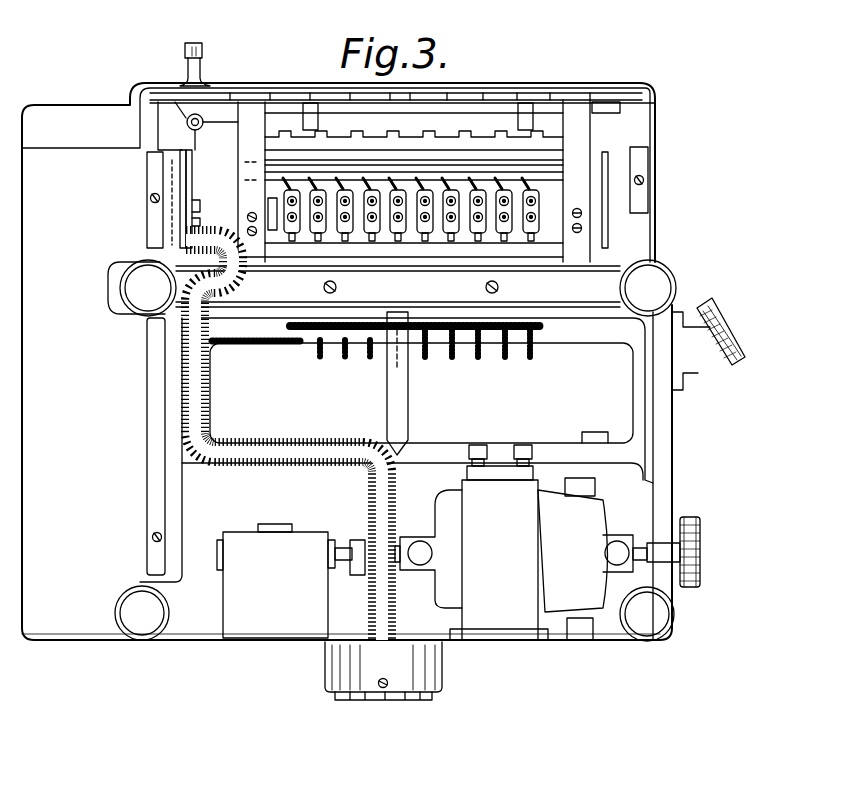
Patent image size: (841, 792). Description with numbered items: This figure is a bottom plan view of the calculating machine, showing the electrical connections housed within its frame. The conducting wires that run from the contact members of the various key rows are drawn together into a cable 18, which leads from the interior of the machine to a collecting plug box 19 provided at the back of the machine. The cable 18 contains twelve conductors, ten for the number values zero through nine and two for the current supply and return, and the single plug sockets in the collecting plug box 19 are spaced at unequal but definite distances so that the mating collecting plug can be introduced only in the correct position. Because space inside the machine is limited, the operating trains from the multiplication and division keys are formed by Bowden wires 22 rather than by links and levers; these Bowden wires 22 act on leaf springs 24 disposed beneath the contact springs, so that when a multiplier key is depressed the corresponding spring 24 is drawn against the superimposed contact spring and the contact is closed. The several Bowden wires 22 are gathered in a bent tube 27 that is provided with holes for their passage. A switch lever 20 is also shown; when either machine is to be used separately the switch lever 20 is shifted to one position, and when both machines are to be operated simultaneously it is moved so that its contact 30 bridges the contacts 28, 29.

The cable 18 is at (203, 394).
The collecting plug box 19 is at (383, 671).
The switch lever 20 is at (197, 70).
The Bowden wires 22 is at (287, 190).
The leaf springs 24 is at (322, 240).
The bent tube 27 is at (414, 166).
The contact 28 is at (181, 153).
The contact 29 is at (187, 163).
The contact 30 is at (181, 126).